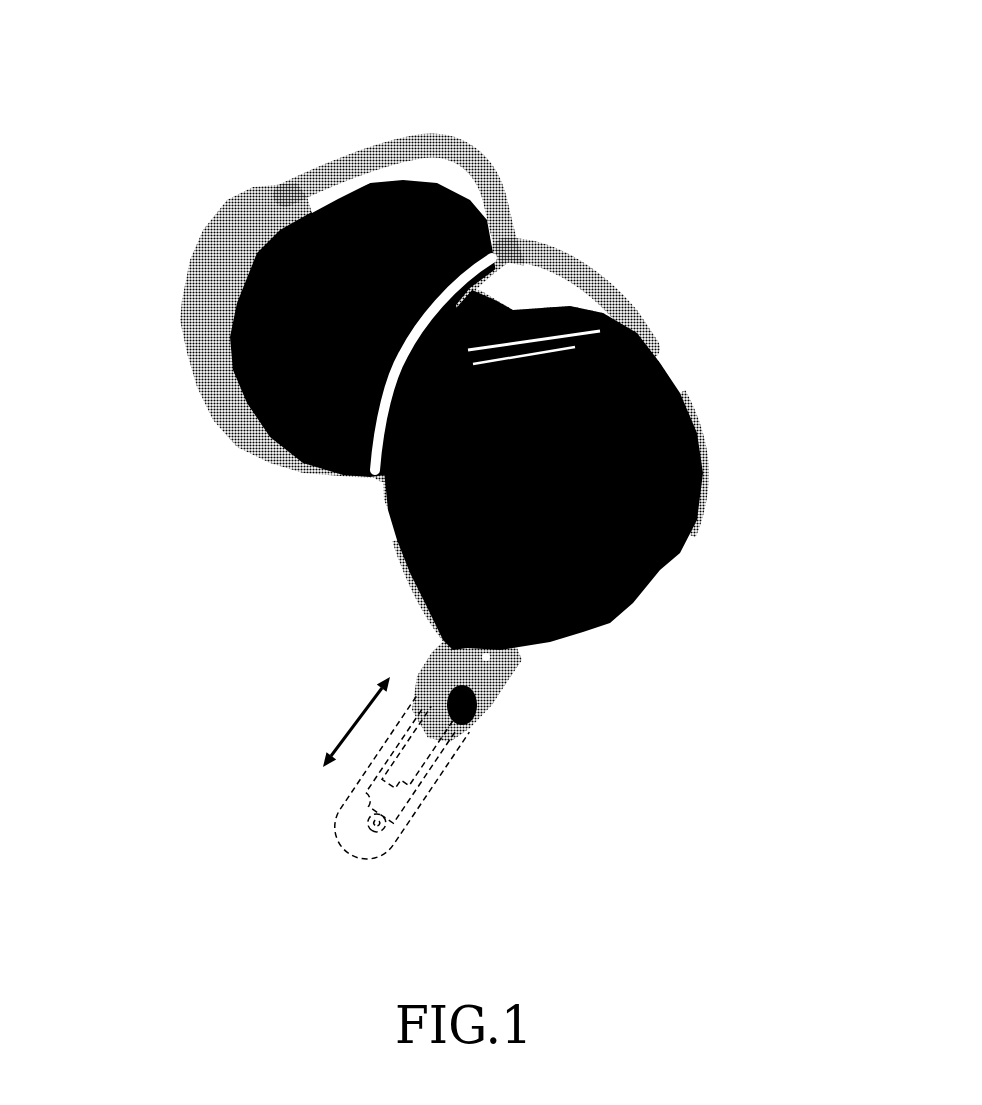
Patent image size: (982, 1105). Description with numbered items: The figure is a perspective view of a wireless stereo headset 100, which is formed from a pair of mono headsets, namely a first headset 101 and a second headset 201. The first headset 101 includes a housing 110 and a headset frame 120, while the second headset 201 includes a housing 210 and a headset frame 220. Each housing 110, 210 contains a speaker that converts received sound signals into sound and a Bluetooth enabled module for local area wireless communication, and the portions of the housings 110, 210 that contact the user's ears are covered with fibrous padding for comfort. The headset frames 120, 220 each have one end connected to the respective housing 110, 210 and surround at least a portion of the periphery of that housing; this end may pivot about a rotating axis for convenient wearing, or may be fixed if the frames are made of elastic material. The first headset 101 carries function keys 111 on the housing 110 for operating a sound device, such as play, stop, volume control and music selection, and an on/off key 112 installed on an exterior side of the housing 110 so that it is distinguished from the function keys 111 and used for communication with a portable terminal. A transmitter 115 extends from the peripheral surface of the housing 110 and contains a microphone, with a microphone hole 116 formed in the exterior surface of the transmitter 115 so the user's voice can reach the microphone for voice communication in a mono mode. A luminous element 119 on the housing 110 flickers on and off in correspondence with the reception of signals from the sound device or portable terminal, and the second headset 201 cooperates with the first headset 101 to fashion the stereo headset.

The wireless stereo headset 100 is at (470, 37).
The first headset 101 is at (686, 571).
The housing 110 is at (690, 394).
The function keys 111 is at (648, 345).
The on/off key 112 is at (423, 584).
The transmitter 115 is at (488, 707).
The microphone hole 116 is at (462, 715).
The luminous element 119 is at (690, 463).
The headset frame 120 is at (580, 258).
The second headset 201 is at (168, 263).
The housing 210 is at (214, 424).
The headset frame 220 is at (500, 178).